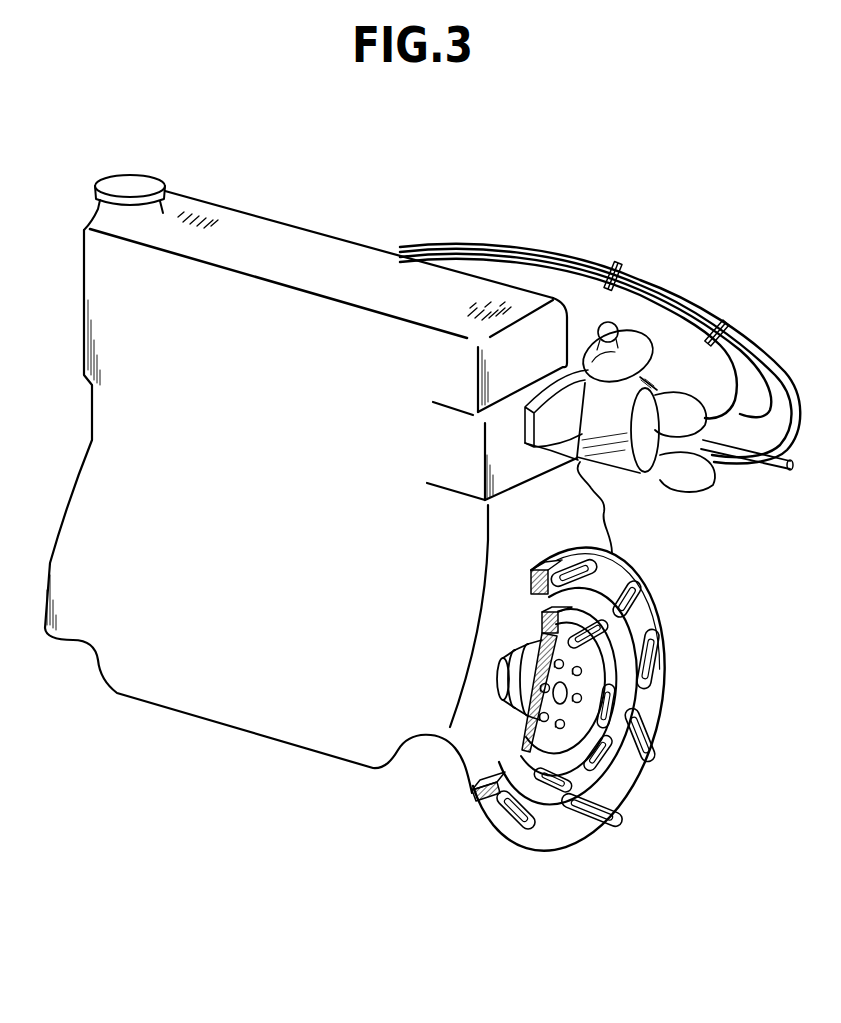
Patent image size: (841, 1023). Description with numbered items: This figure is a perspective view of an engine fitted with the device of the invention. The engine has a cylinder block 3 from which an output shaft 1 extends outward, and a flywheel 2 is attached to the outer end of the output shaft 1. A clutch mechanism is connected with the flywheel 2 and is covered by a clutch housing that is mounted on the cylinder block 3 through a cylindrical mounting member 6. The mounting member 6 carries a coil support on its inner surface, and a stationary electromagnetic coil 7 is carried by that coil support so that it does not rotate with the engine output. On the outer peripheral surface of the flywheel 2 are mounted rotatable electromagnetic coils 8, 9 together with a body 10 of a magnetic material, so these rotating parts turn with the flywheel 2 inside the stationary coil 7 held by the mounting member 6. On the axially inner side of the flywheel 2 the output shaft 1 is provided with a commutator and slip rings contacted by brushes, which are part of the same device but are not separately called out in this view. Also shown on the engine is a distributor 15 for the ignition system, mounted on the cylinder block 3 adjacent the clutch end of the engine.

The output shaft 1 is at (500, 672).
The flywheel 2 is at (530, 720).
The cylinder block 3 is at (593, 511).
The cylindrical mounting member 6 is at (645, 585).
The stationary electromagnetic coil 7 is at (660, 665).
The rotatable electromagnetic coil 8 is at (615, 711).
The rotatable electromagnetic coil 9 is at (600, 752).
The body of magnetic material 10 is at (548, 612).
The distributor 15 is at (613, 463).